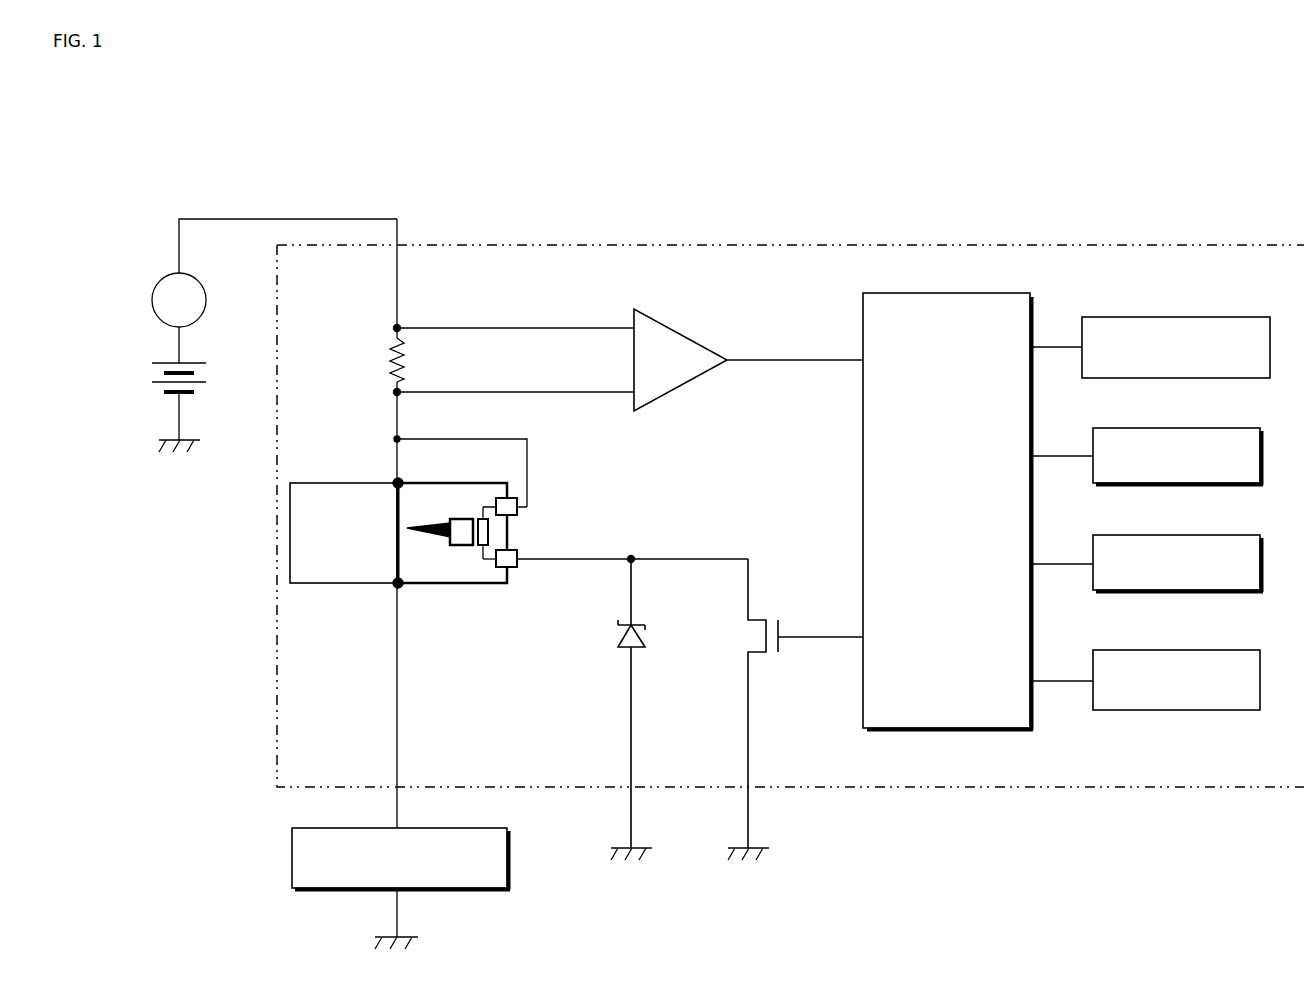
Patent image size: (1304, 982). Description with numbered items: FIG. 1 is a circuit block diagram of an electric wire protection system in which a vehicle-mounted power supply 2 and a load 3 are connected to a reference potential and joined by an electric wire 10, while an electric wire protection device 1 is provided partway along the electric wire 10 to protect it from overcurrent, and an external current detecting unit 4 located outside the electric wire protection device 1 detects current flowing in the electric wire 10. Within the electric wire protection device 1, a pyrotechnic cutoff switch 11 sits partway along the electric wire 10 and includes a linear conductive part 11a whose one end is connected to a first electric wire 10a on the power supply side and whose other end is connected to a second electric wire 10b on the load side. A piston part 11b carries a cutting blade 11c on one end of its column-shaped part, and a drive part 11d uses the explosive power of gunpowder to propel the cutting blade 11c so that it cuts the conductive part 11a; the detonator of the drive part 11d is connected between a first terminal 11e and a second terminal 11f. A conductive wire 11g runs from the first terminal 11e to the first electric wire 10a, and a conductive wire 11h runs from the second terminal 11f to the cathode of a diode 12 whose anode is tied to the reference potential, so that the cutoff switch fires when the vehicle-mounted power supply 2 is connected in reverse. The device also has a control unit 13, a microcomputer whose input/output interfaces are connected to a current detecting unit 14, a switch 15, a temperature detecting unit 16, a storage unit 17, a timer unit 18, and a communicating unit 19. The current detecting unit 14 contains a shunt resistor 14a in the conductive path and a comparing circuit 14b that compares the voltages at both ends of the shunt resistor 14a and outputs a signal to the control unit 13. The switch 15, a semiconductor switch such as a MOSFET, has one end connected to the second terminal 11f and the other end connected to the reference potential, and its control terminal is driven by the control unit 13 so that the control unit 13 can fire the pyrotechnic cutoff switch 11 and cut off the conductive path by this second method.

The electric wire protection device 1 is at (1228, 245).
The vehicle-mounted power supply 2 is at (195, 363).
The load 3 is at (453, 828).
The external current detecting unit 4 is at (185, 276).
The electric wire 10 is at (402, 280).
The first electric wire 10a is at (397, 312).
The second electric wire 10b is at (397, 697).
The pyrotechnic cutoff switch 11 is at (519, 539).
The conductive part 11a is at (397, 512).
The piston part 11b is at (468, 547).
The cutting blade 11c is at (432, 540).
The drive part 11d is at (490, 530).
The first terminal 11e is at (520, 506).
The second terminal 11f is at (520, 568).
The conductive wire 11g is at (528, 443).
The conductive wire 11h is at (568, 562).
The diode 12 is at (648, 630).
The control unit 13 is at (960, 293).
The current detecting unit 14 is at (626, 343).
The shunt resistor 14a is at (402, 366).
The comparing circuit 14b is at (667, 325).
The switch 15 is at (766, 615).
The temperature detecting unit 16 is at (1192, 317).
The storage unit 17 is at (1195, 428).
The timer unit 18 is at (1195, 535).
The communicating unit 19 is at (1195, 650).